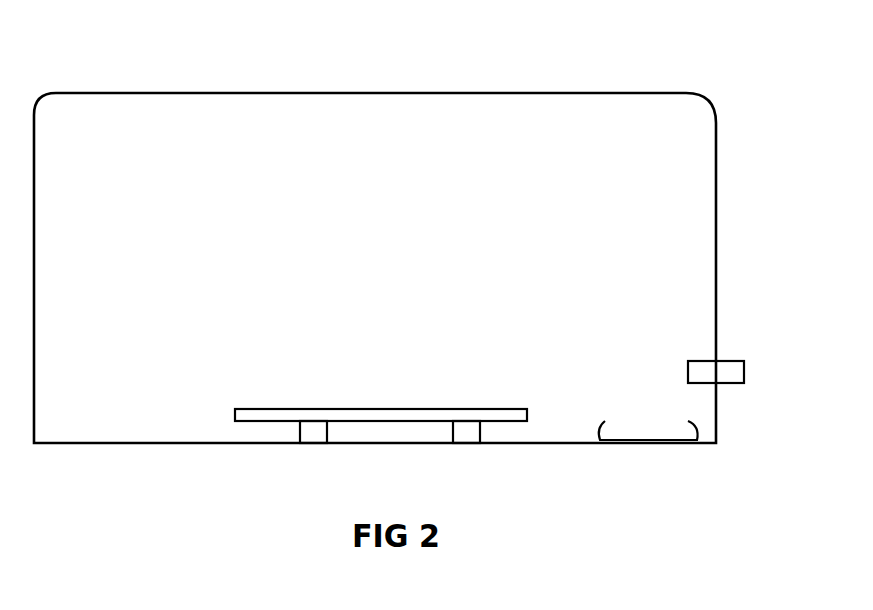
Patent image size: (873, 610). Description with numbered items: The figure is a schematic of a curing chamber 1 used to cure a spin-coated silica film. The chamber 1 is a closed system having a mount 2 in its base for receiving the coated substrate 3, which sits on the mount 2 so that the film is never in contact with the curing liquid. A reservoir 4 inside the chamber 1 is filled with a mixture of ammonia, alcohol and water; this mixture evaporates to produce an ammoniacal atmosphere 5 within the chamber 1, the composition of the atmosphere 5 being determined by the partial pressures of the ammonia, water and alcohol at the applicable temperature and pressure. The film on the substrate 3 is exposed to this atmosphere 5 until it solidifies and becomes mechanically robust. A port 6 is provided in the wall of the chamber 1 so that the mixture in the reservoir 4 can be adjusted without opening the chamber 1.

The curing chamber 1 is at (652, 94).
The mount 2 is at (482, 433).
The substrate 3 is at (247, 418).
The reservoir 4 is at (690, 422).
The atmosphere 5 is at (153, 182).
The port 6 is at (733, 361).